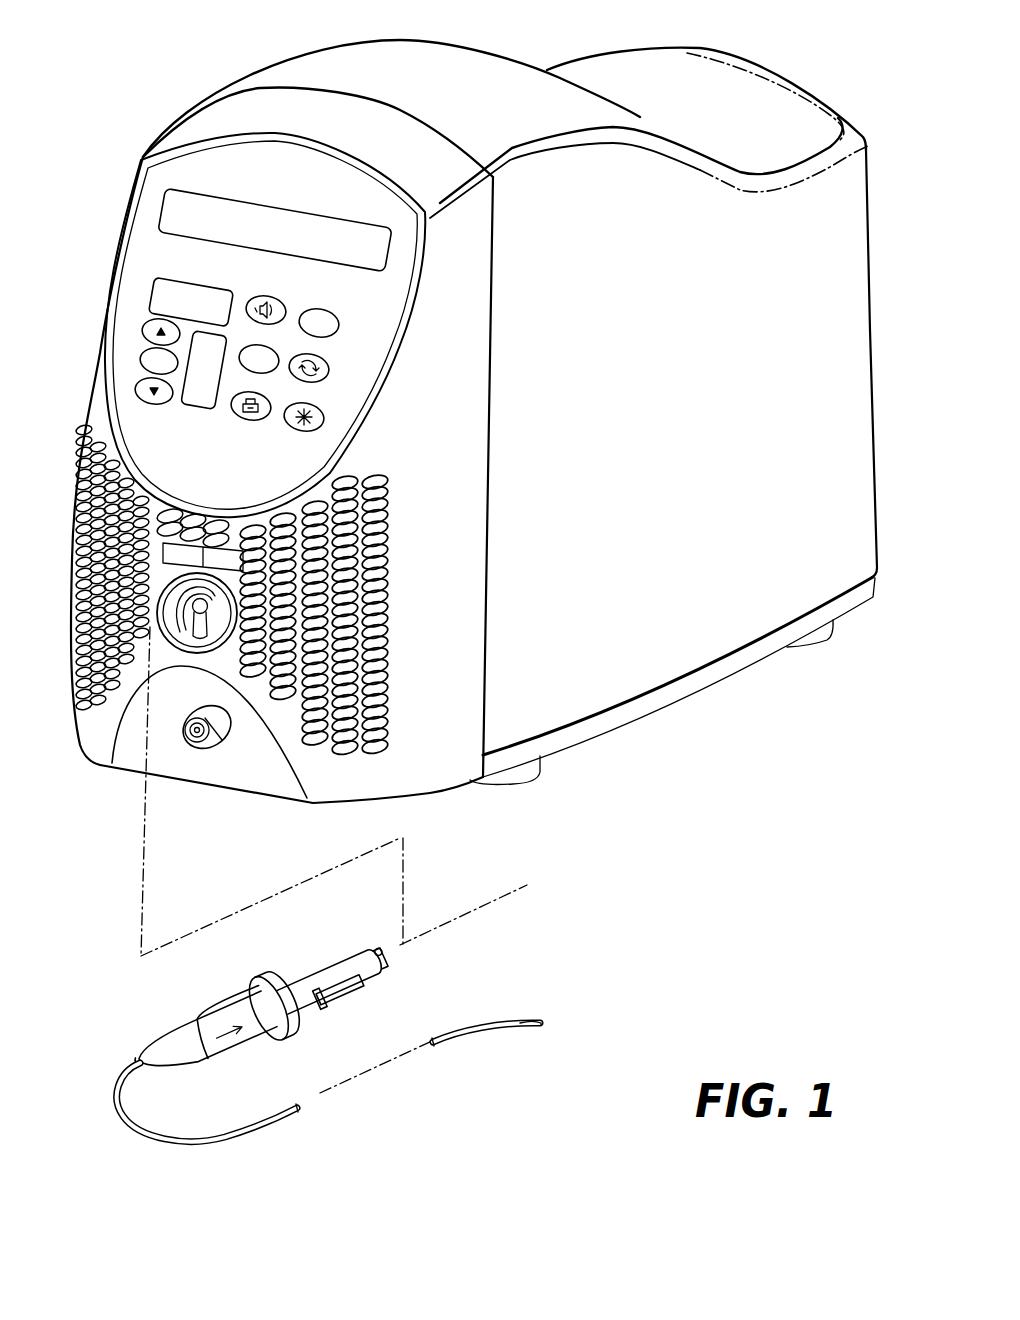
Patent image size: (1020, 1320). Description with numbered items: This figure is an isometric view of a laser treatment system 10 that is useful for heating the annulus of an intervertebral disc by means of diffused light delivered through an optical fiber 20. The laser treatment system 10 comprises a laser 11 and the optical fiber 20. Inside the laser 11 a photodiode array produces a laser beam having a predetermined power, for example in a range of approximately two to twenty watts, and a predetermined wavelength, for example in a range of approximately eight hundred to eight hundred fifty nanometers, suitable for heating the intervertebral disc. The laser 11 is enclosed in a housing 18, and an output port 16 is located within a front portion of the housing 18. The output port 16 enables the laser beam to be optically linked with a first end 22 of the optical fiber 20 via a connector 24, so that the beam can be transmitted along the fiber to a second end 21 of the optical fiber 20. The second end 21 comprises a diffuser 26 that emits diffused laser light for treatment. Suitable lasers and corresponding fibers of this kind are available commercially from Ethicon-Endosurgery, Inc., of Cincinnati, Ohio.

The laser treatment system 10 is at (176, 73).
The laser 11 is at (691, 643).
The output port 16 is at (177, 637).
The housing 18 is at (97, 407).
The optical fiber 20 is at (477, 1025).
The second end 21 is at (460, 1040).
The first end 22 is at (377, 950).
The connector 24 is at (310, 980).
The diffuser 26 is at (523, 1022).